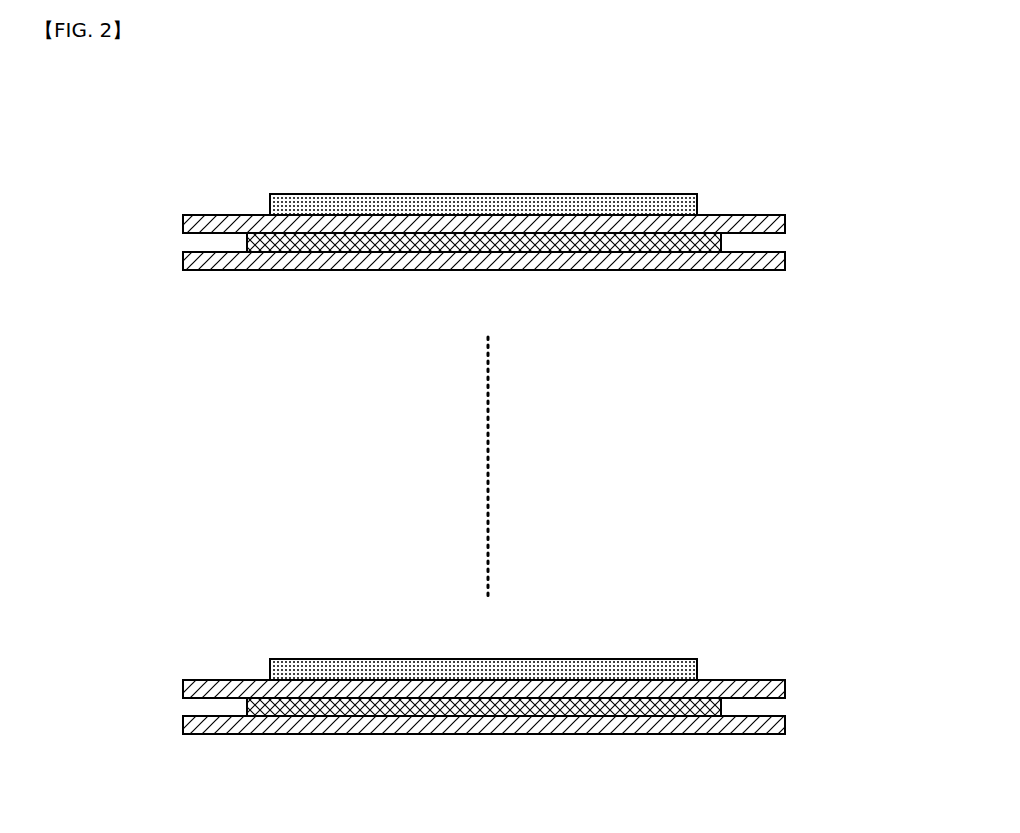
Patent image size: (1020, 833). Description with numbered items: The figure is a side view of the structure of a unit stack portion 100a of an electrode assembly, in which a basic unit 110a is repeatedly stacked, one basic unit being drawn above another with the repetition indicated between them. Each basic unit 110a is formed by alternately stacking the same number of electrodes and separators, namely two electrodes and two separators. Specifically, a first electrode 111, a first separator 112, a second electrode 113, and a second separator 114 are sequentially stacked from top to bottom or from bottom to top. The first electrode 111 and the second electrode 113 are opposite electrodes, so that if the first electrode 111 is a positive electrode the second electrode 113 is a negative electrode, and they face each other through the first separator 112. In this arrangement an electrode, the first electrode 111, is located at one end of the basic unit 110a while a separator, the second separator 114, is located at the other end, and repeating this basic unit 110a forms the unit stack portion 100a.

The unit stack portion 100a is at (477, 465).
The basic unit 110a is at (414, 698).
The first electrode 111 is at (271, 668).
The first separator 112 is at (184, 684).
The second electrode 113 is at (248, 704).
The second separator 114 is at (450, 732).